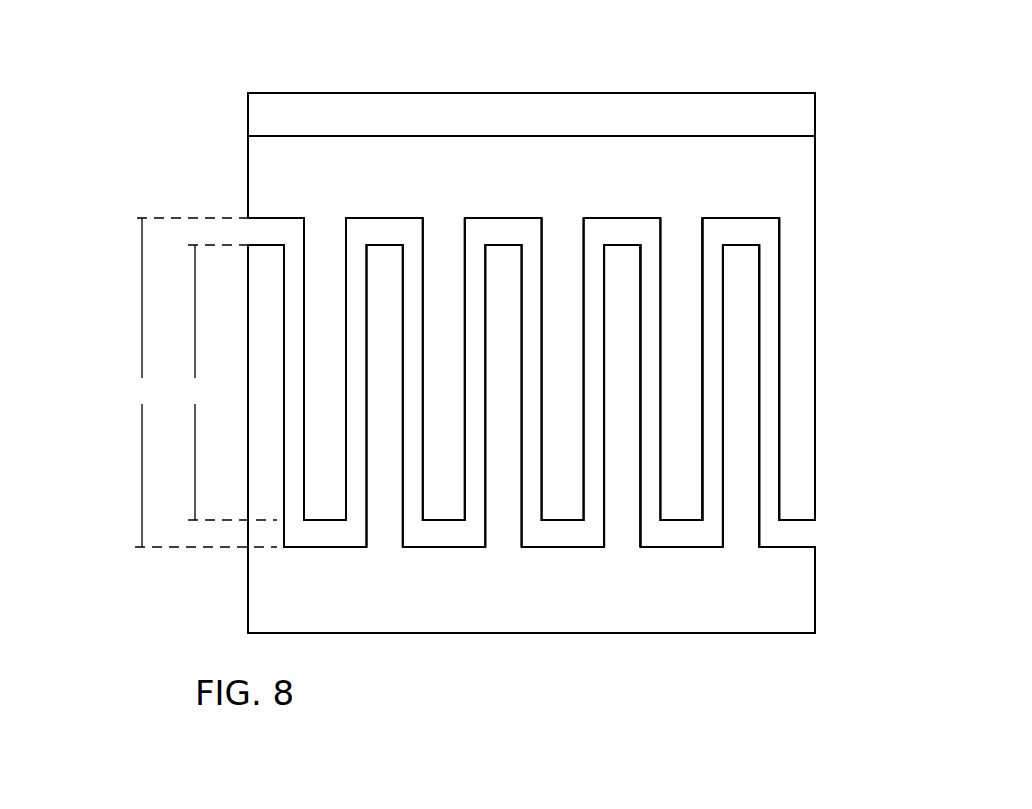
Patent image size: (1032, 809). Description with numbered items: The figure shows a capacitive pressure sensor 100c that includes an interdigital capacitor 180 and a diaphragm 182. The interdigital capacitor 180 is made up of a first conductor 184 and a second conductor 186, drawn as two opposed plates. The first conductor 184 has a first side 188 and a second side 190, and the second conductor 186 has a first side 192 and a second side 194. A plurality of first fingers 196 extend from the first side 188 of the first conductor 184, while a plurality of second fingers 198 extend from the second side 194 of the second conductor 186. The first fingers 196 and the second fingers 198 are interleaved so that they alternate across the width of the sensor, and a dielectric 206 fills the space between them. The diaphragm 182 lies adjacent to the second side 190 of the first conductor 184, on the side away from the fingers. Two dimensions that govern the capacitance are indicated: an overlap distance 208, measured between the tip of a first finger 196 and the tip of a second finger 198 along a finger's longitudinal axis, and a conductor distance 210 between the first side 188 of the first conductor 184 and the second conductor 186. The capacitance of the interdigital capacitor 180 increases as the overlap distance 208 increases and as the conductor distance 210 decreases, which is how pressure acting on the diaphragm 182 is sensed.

The capacitive pressure sensor 100c is at (177, 123).
The interdigital capacitor 180 is at (847, 470).
The diaphragm 182 is at (787, 93).
The first conductor 184 is at (815, 180).
The second conductor 186 is at (817, 587).
The first side of the first conductor 188 is at (763, 226).
The second side of the first conductor 190 is at (798, 135).
The first side of the second conductor 192 is at (775, 633).
The second side of the second conductor 194 is at (792, 547).
The first fingers 196 is at (702, 308).
The second fingers 198 is at (641, 468).
The dielectric 206 is at (592, 535).
The overlap distance 208 is at (230, 382).
The conductor distance 210 is at (200, 382).